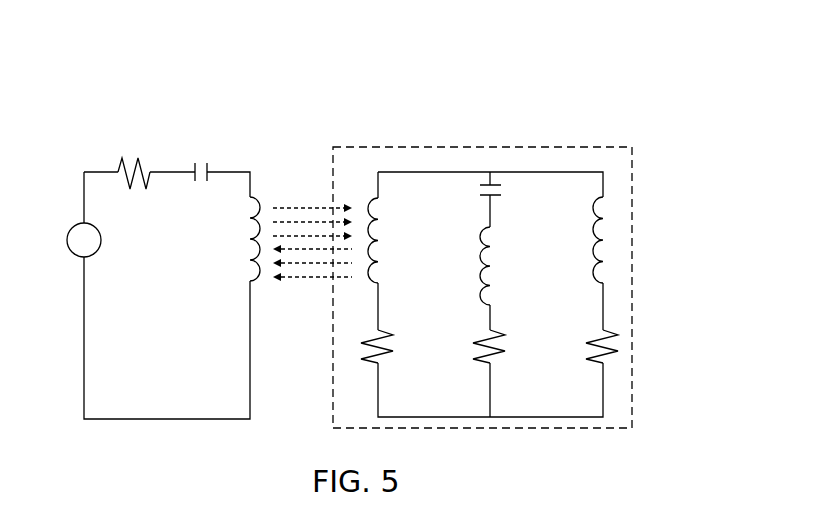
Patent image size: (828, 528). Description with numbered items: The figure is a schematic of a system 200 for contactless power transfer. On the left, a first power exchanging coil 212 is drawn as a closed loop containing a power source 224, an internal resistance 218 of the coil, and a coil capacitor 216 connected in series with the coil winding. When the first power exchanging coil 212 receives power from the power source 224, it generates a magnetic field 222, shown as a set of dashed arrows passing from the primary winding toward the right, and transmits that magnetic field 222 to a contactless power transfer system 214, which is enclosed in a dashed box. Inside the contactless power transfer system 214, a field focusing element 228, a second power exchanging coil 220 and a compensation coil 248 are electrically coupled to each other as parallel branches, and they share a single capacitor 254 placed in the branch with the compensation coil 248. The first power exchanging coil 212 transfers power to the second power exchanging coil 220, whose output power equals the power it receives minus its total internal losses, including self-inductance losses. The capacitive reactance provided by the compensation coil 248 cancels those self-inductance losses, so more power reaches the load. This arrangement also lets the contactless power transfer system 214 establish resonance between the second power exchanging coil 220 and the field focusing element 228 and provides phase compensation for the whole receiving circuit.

The system 200 is at (575, 46).
The first power exchanging coil 212 is at (96, 171).
The contactless power transfer system 214 is at (512, 147).
The coil capacitor 216 is at (209, 168).
The internal resistance 218 is at (139, 161).
The second power exchanging coil 220 is at (595, 222).
The magnetic field 222 is at (283, 205).
The power source 224 is at (102, 240).
The field focusing element 228 is at (370, 265).
The compensation coil 248 is at (483, 251).
The capacitor 254 is at (485, 197).